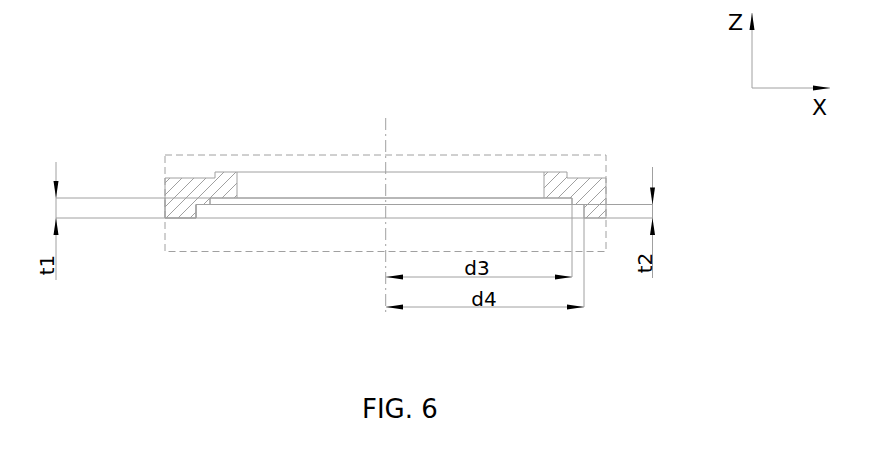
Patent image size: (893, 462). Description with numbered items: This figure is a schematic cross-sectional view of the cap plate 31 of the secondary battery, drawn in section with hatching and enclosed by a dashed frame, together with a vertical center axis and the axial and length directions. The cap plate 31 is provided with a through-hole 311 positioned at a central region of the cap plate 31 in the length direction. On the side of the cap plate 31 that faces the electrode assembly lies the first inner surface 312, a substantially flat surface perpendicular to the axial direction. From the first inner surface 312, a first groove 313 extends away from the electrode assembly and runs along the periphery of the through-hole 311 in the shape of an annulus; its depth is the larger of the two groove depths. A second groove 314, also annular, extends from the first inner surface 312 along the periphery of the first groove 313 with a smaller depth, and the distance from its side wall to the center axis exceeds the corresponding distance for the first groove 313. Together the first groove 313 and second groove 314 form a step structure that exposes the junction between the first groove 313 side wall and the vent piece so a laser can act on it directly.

The cap plate 31 is at (183, 180).
The through-hole 311 is at (267, 187).
The first inner surface 312 is at (177, 220).
The first groove 313 is at (222, 203).
The second groove 314 is at (203, 212).